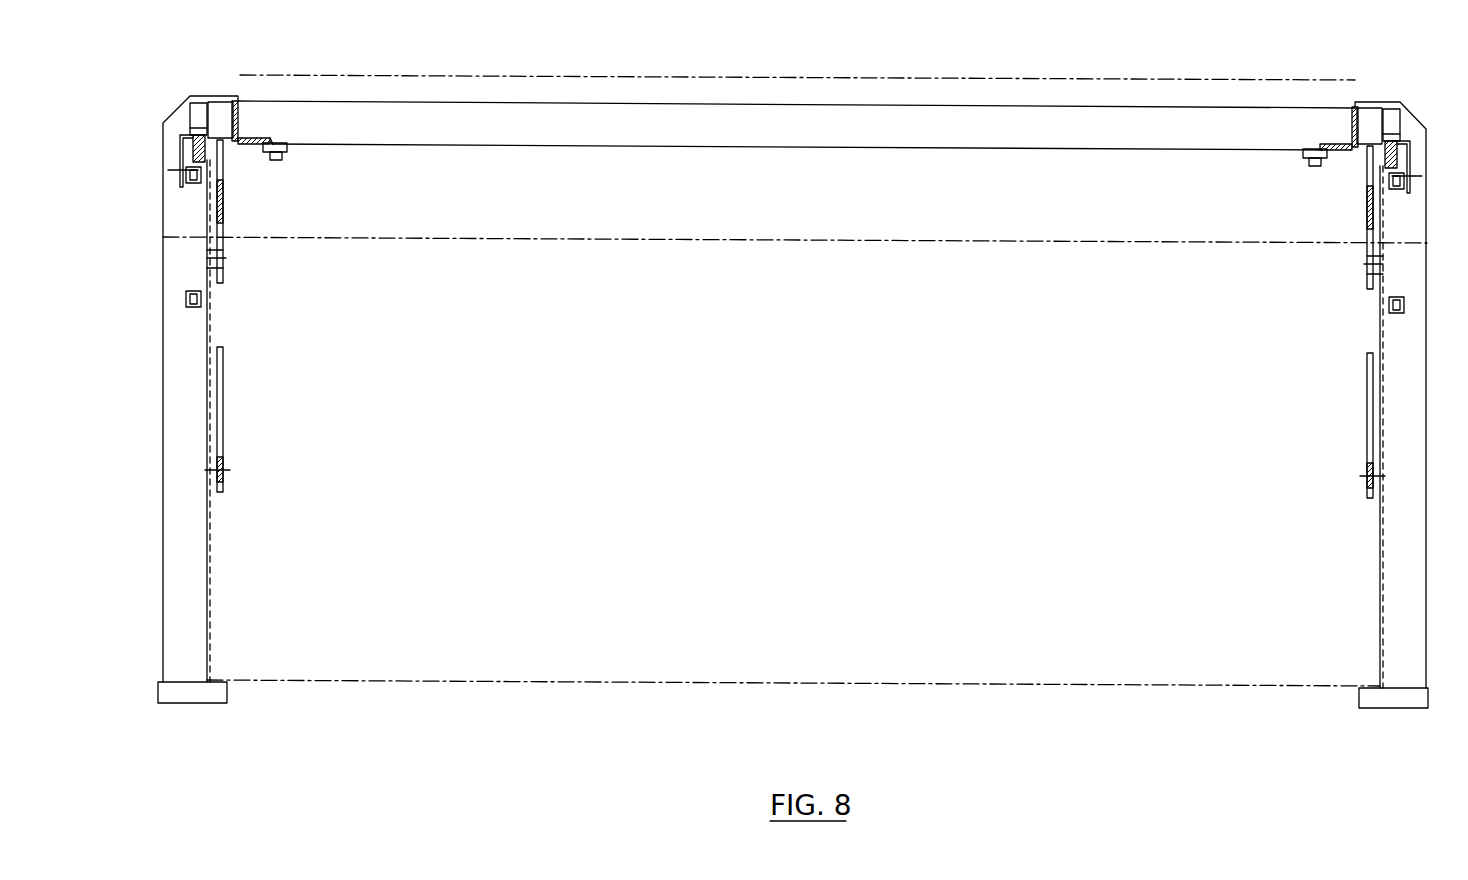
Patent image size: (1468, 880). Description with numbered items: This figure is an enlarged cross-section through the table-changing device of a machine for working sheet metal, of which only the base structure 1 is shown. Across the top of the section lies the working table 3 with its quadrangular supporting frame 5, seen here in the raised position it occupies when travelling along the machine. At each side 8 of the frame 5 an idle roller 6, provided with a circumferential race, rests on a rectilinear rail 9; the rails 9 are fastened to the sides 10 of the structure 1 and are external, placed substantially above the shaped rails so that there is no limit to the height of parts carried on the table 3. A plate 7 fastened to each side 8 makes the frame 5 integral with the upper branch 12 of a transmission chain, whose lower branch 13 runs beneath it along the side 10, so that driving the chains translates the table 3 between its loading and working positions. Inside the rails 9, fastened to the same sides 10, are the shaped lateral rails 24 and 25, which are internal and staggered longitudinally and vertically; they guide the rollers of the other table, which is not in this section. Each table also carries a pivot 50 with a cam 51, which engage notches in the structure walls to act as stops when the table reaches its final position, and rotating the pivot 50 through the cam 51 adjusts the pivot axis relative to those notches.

The base structure 1 is at (1427, 486).
The working table 3 is at (800, 76).
The supporting frame 5 is at (652, 115).
The idle roller 6 is at (196, 108).
The plate 7 is at (180, 152).
The side 8 is at (226, 120).
The rectilinear rail 9 is at (197, 132).
The side 10 is at (206, 575).
The upper branch 12 is at (193, 186).
The lower branch 13 is at (192, 310).
The shaped lateral rail 24 is at (226, 203).
The shaped lateral rail 25 is at (223, 422).
The pivot 50 is at (280, 136).
The cam 51 is at (278, 162).